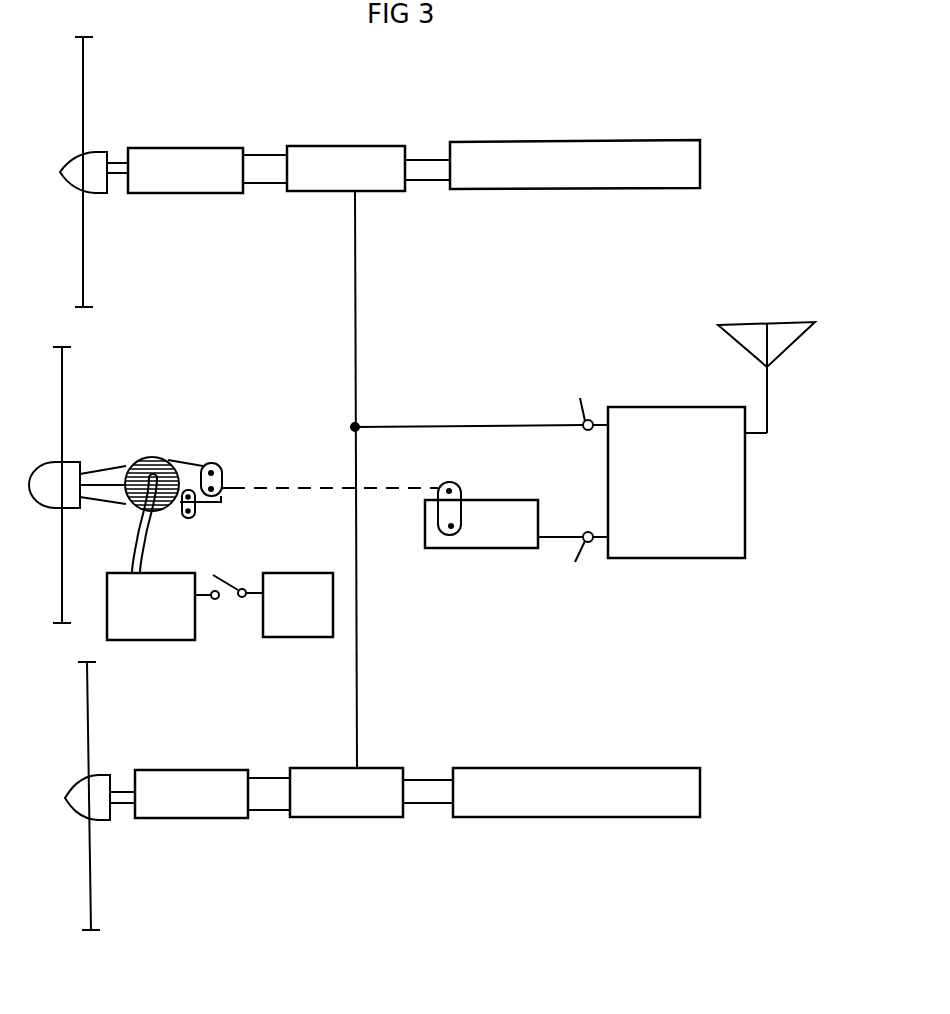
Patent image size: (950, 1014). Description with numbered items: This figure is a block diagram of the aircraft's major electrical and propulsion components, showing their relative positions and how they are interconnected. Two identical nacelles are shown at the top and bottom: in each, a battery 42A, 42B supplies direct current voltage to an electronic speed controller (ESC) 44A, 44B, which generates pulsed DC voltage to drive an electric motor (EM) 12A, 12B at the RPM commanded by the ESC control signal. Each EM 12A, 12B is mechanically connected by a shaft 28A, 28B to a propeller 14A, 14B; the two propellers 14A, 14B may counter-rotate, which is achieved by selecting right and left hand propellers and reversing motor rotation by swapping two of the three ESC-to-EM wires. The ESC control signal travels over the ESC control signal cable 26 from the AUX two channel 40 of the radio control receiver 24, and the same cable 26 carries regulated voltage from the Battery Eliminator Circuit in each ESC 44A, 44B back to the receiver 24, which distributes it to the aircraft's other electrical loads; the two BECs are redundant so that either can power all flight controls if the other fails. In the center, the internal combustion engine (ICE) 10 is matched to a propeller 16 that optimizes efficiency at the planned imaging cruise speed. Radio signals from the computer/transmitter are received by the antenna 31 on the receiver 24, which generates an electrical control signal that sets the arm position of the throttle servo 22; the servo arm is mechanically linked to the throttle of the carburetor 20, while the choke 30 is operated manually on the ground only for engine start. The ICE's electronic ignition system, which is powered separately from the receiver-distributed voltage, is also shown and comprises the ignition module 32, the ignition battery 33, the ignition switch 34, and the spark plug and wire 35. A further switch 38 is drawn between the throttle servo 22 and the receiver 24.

The ICE 10 is at (148, 457).
The EM 12A is at (213, 820).
The EM 12B is at (225, 193).
The propeller 14A is at (90, 875).
The propeller 14B is at (85, 120).
The propeller 16 is at (62, 410).
The carburetor 20 is at (218, 465).
The throttle servo 22 is at (483, 550).
The radio control receiver 24 is at (710, 557).
The ESC control signal cable 26 is at (355, 350).
The shaft 28A is at (120, 790).
The shaft 28B is at (117, 175).
The choke 30 is at (197, 508).
The antenna 31 is at (745, 325).
The ignition module 32 is at (147, 640).
The ignition battery 33 is at (313, 637).
The ignition switch 34 is at (242, 600).
The spark plug and wire 35 is at (145, 538).
The switch 38 is at (573, 572).
The AUX 2 channel 40 is at (481, 396).
The battery 42A is at (598, 817).
The battery 42B is at (563, 190).
The ESC 44A is at (368, 817).
The ESC 44B is at (402, 192).